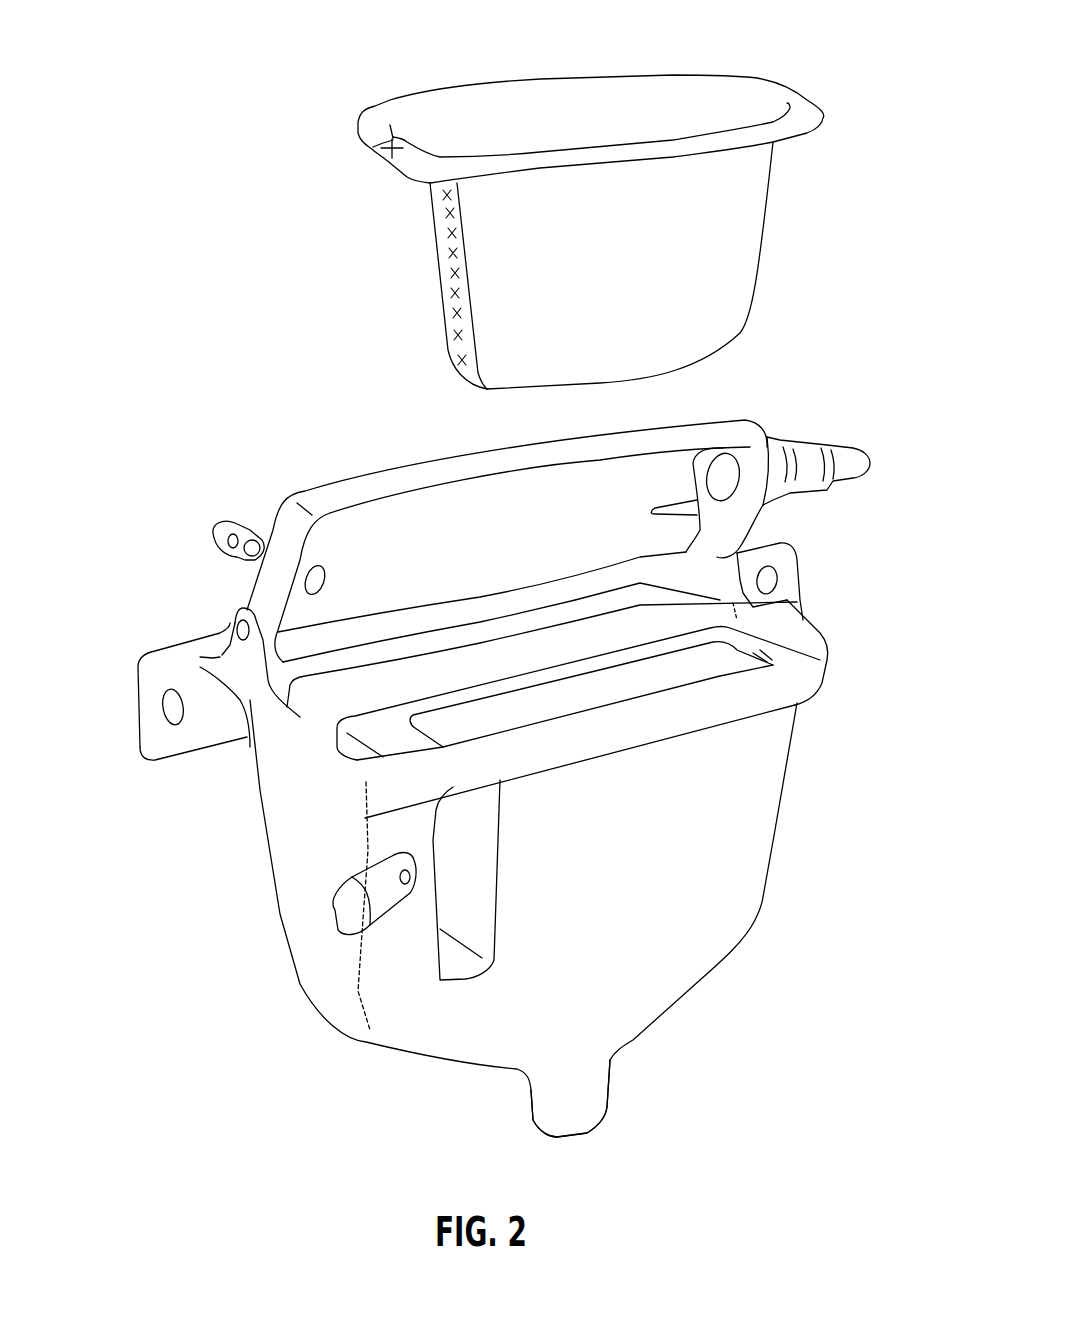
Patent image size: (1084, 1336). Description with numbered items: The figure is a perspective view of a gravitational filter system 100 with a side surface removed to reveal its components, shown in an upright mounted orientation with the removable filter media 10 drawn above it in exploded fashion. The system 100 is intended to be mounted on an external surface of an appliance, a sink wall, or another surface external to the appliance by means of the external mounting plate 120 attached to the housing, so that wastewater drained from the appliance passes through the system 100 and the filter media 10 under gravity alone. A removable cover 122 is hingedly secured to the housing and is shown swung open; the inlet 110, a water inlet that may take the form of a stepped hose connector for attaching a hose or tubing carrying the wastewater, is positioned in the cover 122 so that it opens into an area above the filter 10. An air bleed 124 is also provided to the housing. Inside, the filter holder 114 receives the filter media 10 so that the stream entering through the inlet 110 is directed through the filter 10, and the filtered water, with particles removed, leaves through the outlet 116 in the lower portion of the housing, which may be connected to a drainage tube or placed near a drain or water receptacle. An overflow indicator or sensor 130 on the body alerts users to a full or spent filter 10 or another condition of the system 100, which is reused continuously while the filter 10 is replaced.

The filter media 10 is at (433, 123).
The gravitational filter system 100 is at (827, 878).
The inlet 110 is at (867, 460).
The filter holder 114 is at (353, 750).
The outlet 116 is at (580, 1138).
The external mounting plate 120 is at (160, 687).
The removable cover 122 is at (430, 473).
The air bleed 124 is at (237, 515).
The overflow indicator or sensor 130 is at (362, 910).